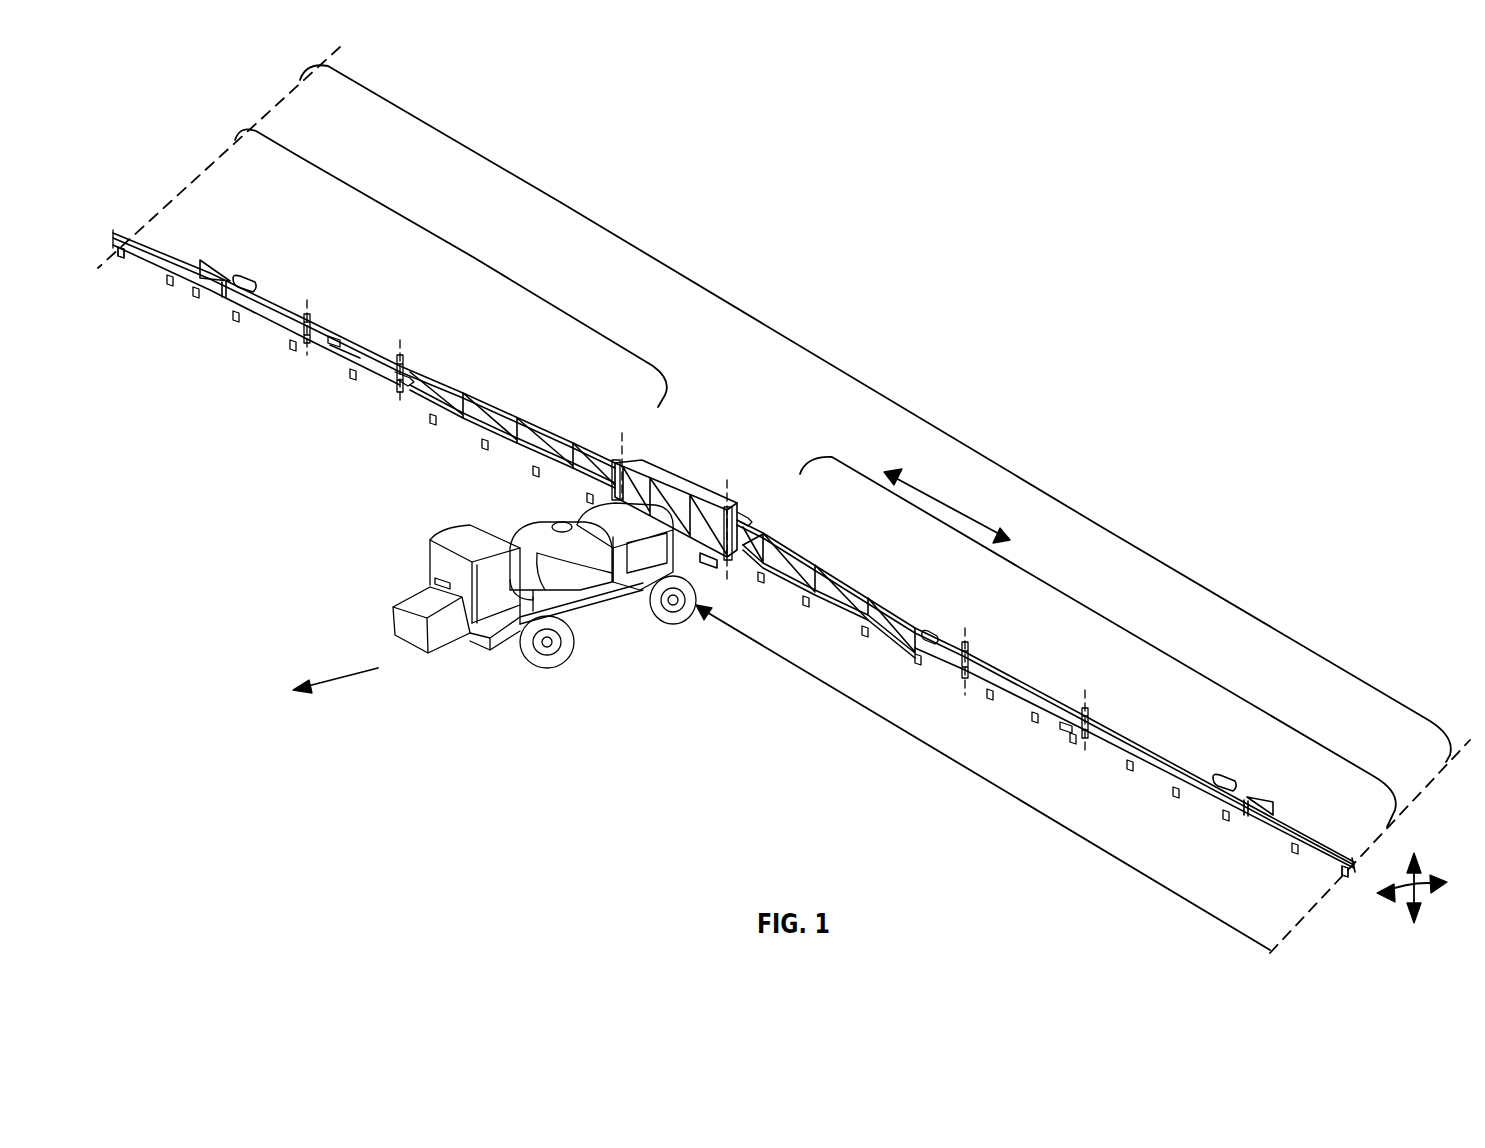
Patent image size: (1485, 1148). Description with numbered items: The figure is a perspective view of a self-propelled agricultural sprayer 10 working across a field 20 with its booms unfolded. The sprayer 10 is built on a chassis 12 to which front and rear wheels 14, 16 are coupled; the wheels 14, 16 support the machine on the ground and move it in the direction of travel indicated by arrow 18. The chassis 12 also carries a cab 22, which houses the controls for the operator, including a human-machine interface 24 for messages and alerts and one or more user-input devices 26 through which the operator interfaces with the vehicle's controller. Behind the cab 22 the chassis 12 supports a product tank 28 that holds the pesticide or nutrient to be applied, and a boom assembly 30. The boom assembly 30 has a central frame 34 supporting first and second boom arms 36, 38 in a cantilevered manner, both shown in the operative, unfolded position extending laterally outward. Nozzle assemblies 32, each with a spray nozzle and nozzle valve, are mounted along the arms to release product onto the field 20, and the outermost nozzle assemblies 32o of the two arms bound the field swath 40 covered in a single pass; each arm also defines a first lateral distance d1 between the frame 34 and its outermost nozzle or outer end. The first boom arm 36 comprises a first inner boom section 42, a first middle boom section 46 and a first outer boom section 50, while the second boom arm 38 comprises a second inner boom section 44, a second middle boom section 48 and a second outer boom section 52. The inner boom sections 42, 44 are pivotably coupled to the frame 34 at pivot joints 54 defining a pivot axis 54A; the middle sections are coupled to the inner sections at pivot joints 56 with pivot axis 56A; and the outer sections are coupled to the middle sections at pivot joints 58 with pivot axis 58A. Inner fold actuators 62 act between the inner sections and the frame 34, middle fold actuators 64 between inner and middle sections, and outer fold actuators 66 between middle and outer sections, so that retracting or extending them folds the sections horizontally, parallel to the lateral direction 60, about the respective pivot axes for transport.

The agricultural sprayer 10 is at (780, 285).
The chassis 12 is at (583, 617).
The front wheels 14 is at (543, 668).
The rear wheels 16 is at (678, 626).
The arrow indicating direction of travel 18 is at (380, 672).
The field 20 is at (708, 748).
The cab 22 is at (450, 543).
The human-machine interface 24 is at (437, 578).
The user-input devices 26 is at (436, 584).
The product tank 28 is at (530, 532).
The boom assembly 30 is at (741, 403).
The nozzle assemblies 32 is at (169, 286).
The outermost nozzle assemblies 32o is at (121, 258).
The frame 34 is at (700, 480).
The first boom arm 36 is at (490, 266).
The second boom arm 38 is at (1110, 617).
The field swath 40 is at (890, 400).
The first inner boom section 42 is at (850, 575).
The second inner boom section 44 is at (488, 400).
The first middle boom section 46 is at (1045, 695).
The second middle boom section 48 is at (345, 333).
The first outer boom section 50 is at (1160, 758).
The second outer boom section 52 is at (305, 310).
The pivot joints 54 is at (625, 468).
The pivot axis 54A is at (622, 445).
The pivot joints 56 is at (405, 356).
The pivot axis 56A is at (400, 405).
The pivot joints 58 is at (312, 320).
The pivot axis 58A is at (305, 350).
The lateral direction 60 is at (947, 503).
The inner fold actuators 62 is at (615, 462).
The middle fold actuators 64 is at (412, 378).
The outer fold actuators 66 is at (330, 342).
The first lateral distance d1 is at (911, 733).